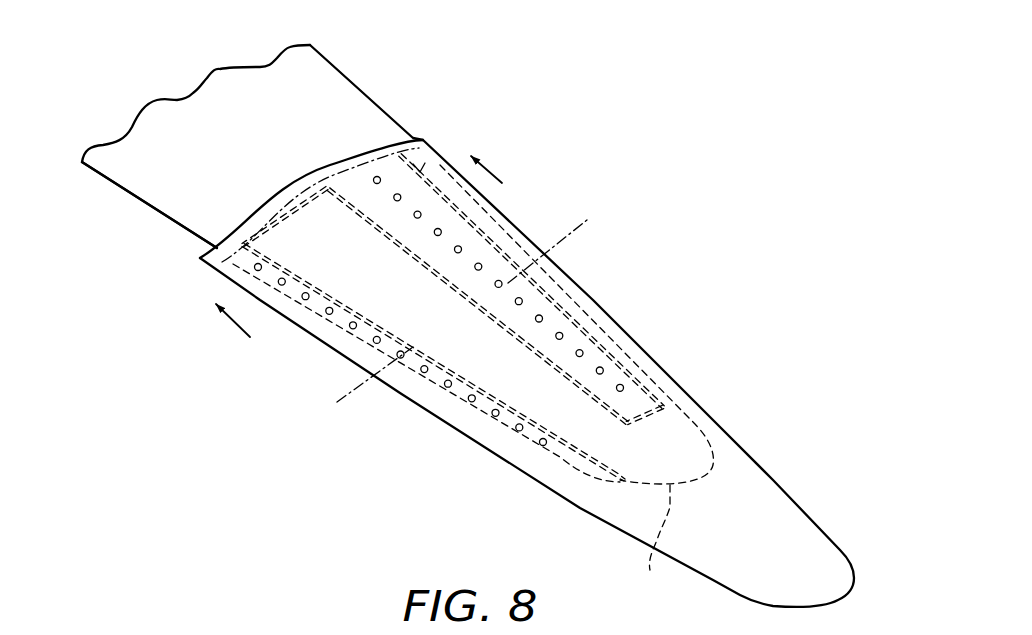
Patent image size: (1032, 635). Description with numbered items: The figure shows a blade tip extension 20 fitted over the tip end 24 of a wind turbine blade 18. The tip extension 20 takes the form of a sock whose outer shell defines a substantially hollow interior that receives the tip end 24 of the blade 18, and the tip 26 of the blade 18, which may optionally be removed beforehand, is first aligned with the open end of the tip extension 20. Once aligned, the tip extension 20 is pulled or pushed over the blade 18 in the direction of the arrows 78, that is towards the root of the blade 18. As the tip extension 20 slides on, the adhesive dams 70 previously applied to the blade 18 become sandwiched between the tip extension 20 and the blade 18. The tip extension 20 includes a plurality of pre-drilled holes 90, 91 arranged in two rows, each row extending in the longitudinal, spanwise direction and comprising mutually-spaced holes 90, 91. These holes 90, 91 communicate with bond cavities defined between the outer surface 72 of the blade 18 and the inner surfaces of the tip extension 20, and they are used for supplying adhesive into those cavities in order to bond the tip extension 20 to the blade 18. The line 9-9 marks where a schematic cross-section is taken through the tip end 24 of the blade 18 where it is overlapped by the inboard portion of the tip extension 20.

The section line 9- 9 is at (575, 225).
The wind turbine blade 18 is at (226, 78).
The blade tip extension 20 is at (815, 479).
The tip end 24 is at (690, 439).
The tip 26 is at (654, 541).
The adhesive dams 70 is at (443, 153).
The outer surface 72 is at (119, 167).
The arrows 78 is at (489, 168).
The pre-drilled holes 90 is at (603, 369).
The pre-drilled holes 91 is at (541, 445).